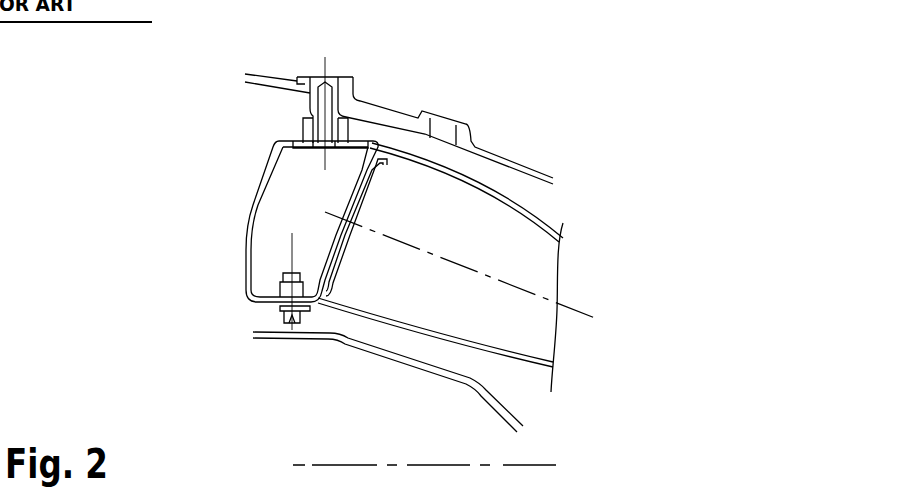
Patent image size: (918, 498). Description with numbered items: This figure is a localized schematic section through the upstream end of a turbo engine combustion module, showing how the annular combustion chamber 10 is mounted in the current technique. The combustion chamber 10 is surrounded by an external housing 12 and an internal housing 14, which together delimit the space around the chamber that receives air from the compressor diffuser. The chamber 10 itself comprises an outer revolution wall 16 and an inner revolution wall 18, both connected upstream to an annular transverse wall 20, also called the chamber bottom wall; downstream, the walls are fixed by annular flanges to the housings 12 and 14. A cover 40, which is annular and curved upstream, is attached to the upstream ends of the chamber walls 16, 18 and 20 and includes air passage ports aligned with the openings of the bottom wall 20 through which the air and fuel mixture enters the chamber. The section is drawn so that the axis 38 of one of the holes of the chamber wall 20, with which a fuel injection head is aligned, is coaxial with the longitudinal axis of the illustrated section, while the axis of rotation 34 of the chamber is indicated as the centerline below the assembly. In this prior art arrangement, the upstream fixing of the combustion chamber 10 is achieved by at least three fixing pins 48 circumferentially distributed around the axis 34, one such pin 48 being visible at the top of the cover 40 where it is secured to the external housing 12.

The combustion chamber 10 is at (224, 236).
The external housing 12 is at (508, 159).
The internal housing 14 is at (454, 384).
The outer revolution wall 16 is at (548, 222).
The inner revolution wall 18 is at (512, 354).
The annular transverse wall 20 is at (343, 258).
The axis of rotation 34 is at (340, 465).
The axis of hole 38 is at (435, 251).
The cover 40 is at (246, 270).
The fixing pin 48 is at (343, 77).